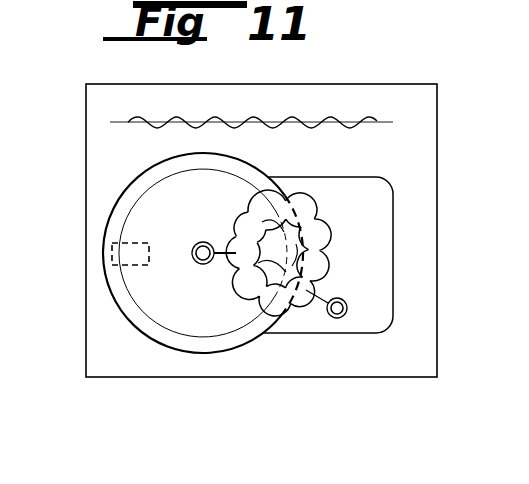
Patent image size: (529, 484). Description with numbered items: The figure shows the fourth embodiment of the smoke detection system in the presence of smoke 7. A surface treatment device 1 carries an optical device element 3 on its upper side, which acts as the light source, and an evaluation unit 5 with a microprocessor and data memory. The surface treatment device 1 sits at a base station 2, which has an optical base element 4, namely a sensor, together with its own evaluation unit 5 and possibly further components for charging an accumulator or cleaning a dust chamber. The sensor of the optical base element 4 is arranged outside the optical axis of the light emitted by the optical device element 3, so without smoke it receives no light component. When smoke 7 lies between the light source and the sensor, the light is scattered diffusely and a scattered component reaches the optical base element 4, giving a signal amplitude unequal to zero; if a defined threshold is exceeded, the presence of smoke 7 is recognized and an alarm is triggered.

The surface treatment device 1 is at (152, 330).
The base station 2 is at (377, 235).
The optical device element 3 is at (201, 262).
The optical base element 4 is at (334, 318).
The evaluation unit 5 is at (122, 250).
The smoke 7 is at (316, 208).